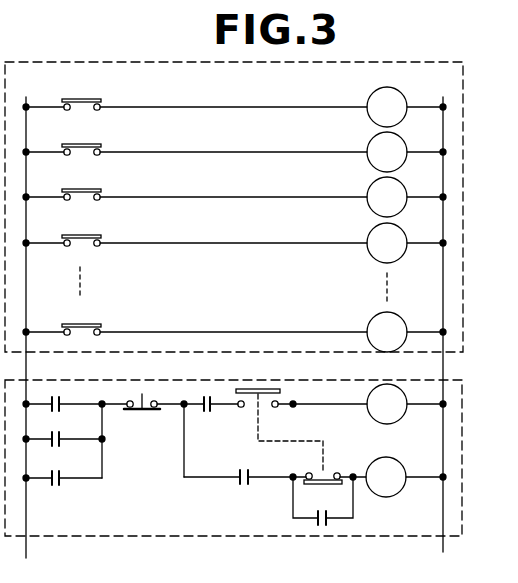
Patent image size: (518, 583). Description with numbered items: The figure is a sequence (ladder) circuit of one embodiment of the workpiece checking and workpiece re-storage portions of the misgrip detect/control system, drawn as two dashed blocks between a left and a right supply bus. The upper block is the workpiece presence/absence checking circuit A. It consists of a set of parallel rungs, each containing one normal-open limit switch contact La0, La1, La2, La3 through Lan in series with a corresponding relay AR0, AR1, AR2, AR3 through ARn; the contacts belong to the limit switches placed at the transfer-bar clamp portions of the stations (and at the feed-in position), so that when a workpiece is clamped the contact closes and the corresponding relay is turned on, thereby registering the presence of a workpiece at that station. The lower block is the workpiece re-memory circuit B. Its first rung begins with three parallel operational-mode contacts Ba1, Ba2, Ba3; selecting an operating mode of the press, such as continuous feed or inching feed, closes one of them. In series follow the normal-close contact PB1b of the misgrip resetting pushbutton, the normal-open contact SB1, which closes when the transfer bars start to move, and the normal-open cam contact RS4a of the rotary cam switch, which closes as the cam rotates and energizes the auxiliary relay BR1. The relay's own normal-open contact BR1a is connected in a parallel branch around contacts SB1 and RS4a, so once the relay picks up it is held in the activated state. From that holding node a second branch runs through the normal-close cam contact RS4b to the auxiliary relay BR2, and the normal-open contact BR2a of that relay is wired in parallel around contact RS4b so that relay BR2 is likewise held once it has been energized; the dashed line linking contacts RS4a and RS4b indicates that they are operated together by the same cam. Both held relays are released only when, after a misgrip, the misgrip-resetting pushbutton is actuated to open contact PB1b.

The workpiece presence/absence checking circuit A is at (464, 198).
The workpiece re-memory circuit B is at (463, 433).
The contact La0 is at (98, 100).
The contact La1 is at (98, 145).
The contact La2 is at (98, 190).
The contact La3 is at (98, 236).
The contact Lan is at (98, 325).
The relay AR0 is at (373, 93).
The relay AR1 is at (373, 138).
The relay AR2 is at (373, 183).
The relay AR3 is at (373, 229).
The relay ARn is at (373, 318).
The contact Ba1 is at (62, 396).
The contact Ba2 is at (60, 431).
The contact Ba3 is at (67, 461).
The contact PB1b is at (145, 394).
The contact SB1 is at (209, 396).
The contact RS4a is at (270, 389).
The auxiliary relay BR1 is at (373, 390).
The contact BR1a is at (240, 470).
The contact RS4b is at (328, 472).
The auxiliary relay BR2 is at (373, 464).
The contact BR2a is at (322, 527).